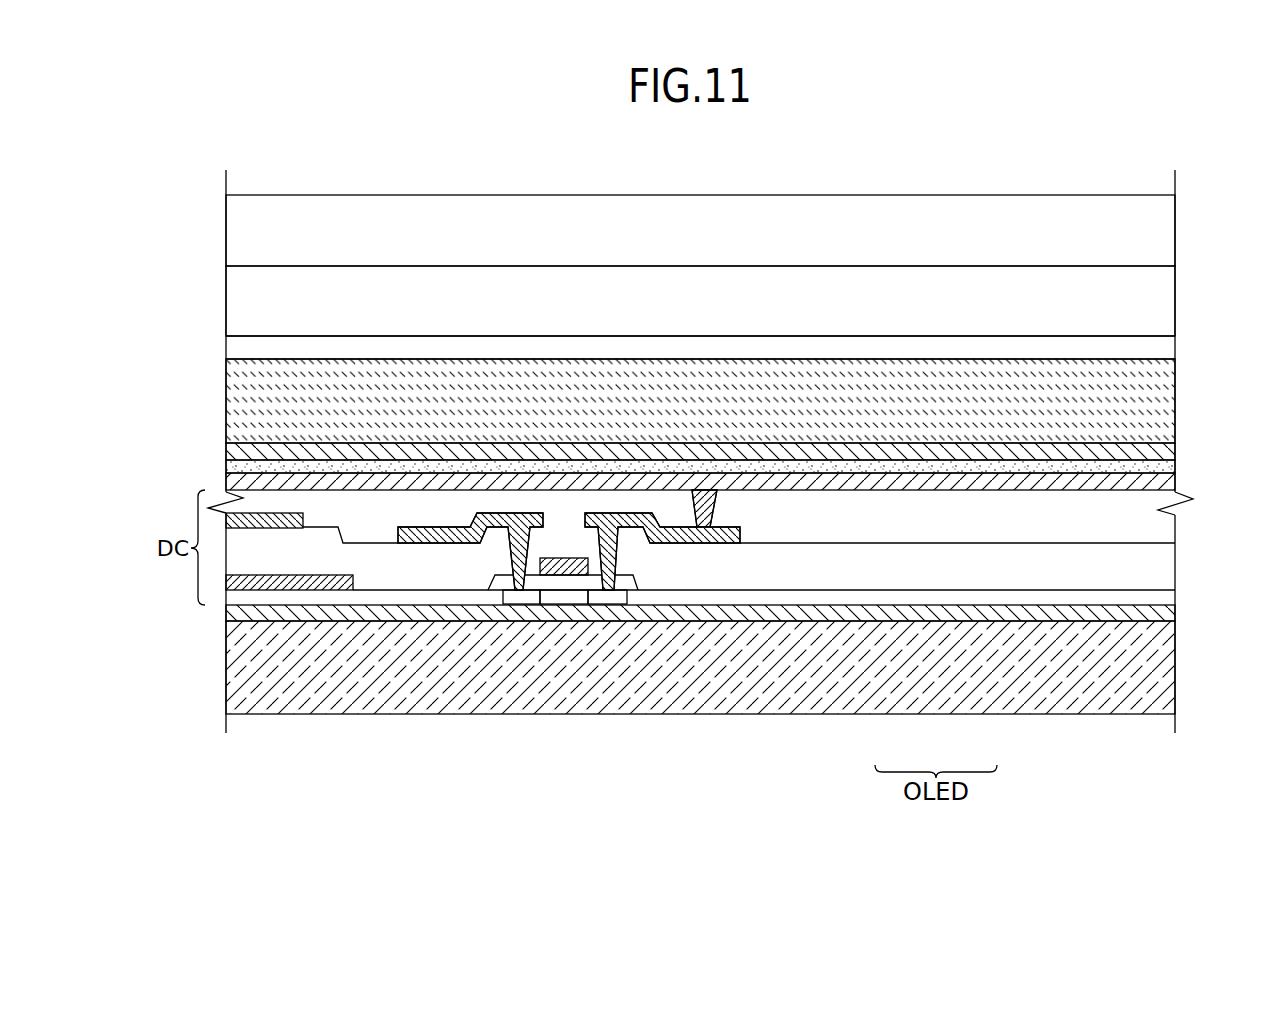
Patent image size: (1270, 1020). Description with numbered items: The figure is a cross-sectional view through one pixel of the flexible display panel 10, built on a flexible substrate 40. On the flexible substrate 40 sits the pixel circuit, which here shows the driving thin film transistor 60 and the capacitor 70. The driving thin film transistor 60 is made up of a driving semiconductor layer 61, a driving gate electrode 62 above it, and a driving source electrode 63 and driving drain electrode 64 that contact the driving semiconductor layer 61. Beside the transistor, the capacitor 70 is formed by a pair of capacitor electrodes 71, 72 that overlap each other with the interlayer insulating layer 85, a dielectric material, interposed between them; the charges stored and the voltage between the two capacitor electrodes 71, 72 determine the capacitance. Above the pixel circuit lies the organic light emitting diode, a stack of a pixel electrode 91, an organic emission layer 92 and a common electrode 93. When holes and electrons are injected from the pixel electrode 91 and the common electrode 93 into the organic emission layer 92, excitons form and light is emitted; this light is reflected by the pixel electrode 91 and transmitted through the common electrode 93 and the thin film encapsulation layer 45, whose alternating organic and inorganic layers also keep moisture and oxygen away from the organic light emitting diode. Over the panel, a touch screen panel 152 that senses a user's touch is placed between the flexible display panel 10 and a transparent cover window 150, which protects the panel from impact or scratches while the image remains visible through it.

The flexible display panel 10 is at (712, 488).
The flexible substrate 40 is at (700, 696).
The thin film encapsulation layer 45 is at (250, 406).
The driving thin film transistor 60 is at (569, 659).
The driving semiconductor layer 61 is at (565, 598).
The driving gate electrode 62 is at (588, 568).
The driving source electrode 63 is at (437, 540).
The driving drain electrode 64 is at (662, 639).
The capacitor 70 is at (289, 654).
The capacitor electrode 71 is at (262, 515).
The capacitor electrode 72 is at (315, 580).
The interlayer insulating layer 85 is at (807, 570).
The pixel electrode 91 is at (892, 480).
The organic emission layer 92 is at (940, 467).
The common electrode 93 is at (992, 450).
The cover window 150 is at (1158, 228).
The touch screen panel 152 is at (1158, 297).